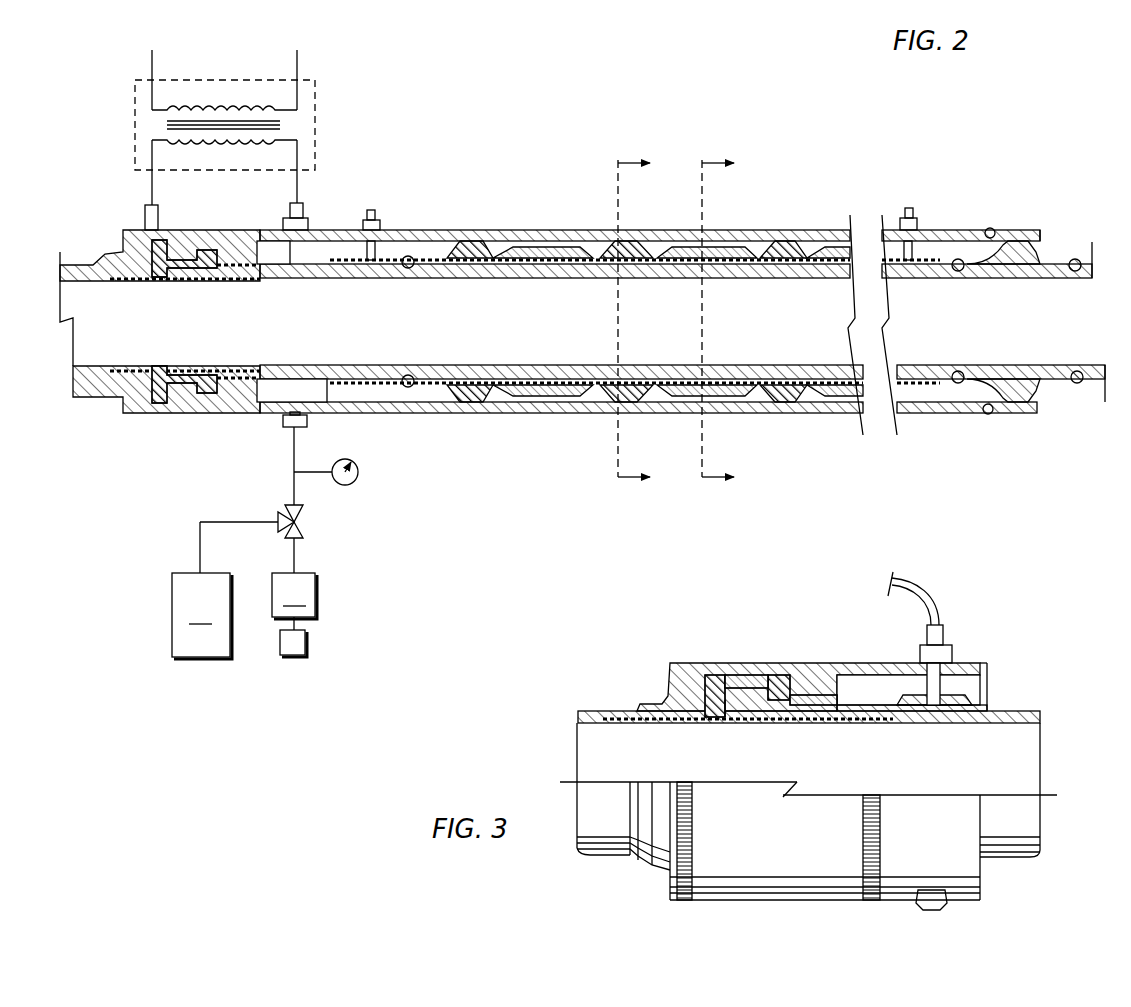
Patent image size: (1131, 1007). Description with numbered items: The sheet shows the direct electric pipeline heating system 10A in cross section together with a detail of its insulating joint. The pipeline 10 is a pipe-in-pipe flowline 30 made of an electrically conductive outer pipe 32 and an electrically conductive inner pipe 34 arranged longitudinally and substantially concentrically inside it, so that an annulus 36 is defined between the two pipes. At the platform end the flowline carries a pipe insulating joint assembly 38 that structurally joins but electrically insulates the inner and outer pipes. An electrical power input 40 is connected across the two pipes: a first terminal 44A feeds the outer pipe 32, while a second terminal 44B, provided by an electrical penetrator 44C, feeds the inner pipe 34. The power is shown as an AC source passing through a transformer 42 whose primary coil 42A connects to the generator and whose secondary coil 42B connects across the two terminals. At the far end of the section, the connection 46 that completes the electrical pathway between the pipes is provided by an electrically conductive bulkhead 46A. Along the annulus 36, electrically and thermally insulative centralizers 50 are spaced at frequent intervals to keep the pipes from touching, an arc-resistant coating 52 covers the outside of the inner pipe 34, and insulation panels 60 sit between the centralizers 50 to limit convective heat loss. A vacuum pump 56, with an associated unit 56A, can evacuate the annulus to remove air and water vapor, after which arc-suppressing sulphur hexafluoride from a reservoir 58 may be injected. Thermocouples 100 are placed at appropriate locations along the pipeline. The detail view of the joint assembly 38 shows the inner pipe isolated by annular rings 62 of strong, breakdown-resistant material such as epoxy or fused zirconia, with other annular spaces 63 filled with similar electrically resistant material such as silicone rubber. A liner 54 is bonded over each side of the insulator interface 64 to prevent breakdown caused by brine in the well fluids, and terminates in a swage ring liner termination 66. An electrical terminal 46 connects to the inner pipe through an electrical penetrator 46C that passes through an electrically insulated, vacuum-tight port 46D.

In FIG. 2, the pipeline 10 is at (822, 418).
In FIG. 2, the direct electric pipeline heating system 10A is at (678, 122).
In FIG. 2, the pipe-in-pipe flowline 30 is at (464, 128).
In FIG. 2, the outer pipe 32 is at (817, 230).
In FIG. 2, the inner pipe 34 is at (572, 279).
In FIG. 2, the annulus 36 is at (415, 245).
In FIG. 3, the annulus 36 is at (873, 695).
In FIG. 2, the pipe insulating joint assembly 38 is at (168, 432).
In FIG. 3, the pipe insulating joint assembly 38 is at (628, 884).
In FIG. 2, the electrical power input 40 is at (239, 132).
In FIG. 3, the electrical power input 40 is at (920, 600).
In FIG. 2, the transformer 42 is at (213, 80).
In FIG. 2, the primary coil 42A is at (152, 62).
In FIG. 2, the secondary coil 42B is at (152, 183).
In FIG. 2, the first terminal 44A is at (158, 215).
In FIG. 2, the second terminal 44B is at (290, 212).
In FIG. 2, the electrical penetrator 44C is at (300, 250).
In FIG. 2, the connection 46 is at (1036, 420).
In FIG. 3, the connection 46 is at (939, 641).
In FIG. 2, the electrically conductive bulkhead 46A is at (1020, 238).
In FIG. 3, the electrical penetrator 46C is at (938, 685).
In FIG. 3, the vacuum-tight port 46D is at (924, 655).
In FIG. 2, the centralizers 50 is at (470, 240).
In FIG. 2, the arc-resistant coating 52 is at (387, 388).
In FIG. 3, the liner 54 is at (647, 717).
In FIG. 2, the vacuum pump 56 is at (555, 632).
In FIG. 3, the vacuum pump 56 is at (930, 897).
In FIG. 2, the controller 56A is at (296, 642).
In FIG. 2, the reservoir 58 is at (202, 616).
In FIG. 2, the insulation panels 60 is at (537, 248).
In FIG. 3, the annular rings 62 is at (712, 678).
In FIG. 3, the annular spaces 63 is at (745, 680).
In FIG. 3, the insulator interface 64 is at (718, 725).
In FIG. 3, the swage ring liner termination 66 is at (940, 723).
In FIG. 2, the thermocouples 100 is at (380, 212).